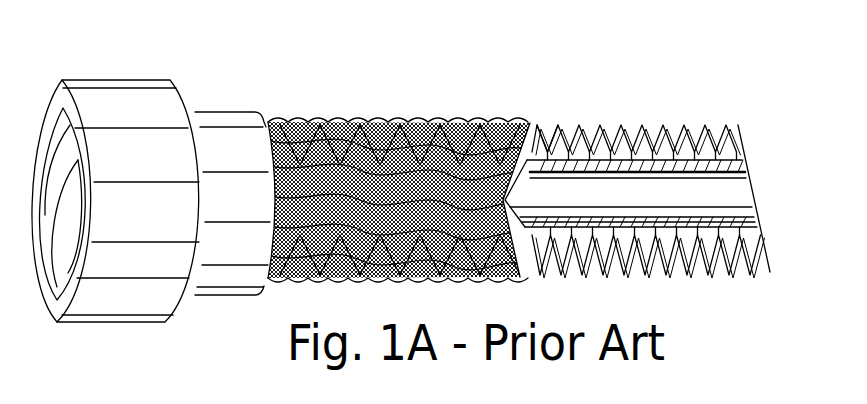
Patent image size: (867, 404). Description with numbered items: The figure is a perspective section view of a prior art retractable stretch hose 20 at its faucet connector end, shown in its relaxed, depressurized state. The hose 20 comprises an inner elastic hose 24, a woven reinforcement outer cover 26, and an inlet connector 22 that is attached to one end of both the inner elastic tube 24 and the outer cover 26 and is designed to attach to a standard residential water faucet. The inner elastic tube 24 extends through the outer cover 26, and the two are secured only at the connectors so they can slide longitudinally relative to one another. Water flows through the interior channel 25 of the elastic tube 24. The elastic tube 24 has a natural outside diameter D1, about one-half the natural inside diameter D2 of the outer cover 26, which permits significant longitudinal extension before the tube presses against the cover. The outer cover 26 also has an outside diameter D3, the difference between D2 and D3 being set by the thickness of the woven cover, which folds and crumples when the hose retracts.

The retractable stretch hose 20 is at (616, 108).
The inlet connector 22 is at (153, 80).
The inner elastic hose 24 is at (557, 128).
The interior channel 25 is at (617, 217).
The woven reinforcement outer cover 26 is at (368, 120).
The natural outside diameter of inner elastic tube D1 is at (782, 228).
The natural inside diameter of outer cover D2 is at (738, 130).
The outside diameter of outer cover D3 is at (443, 318).